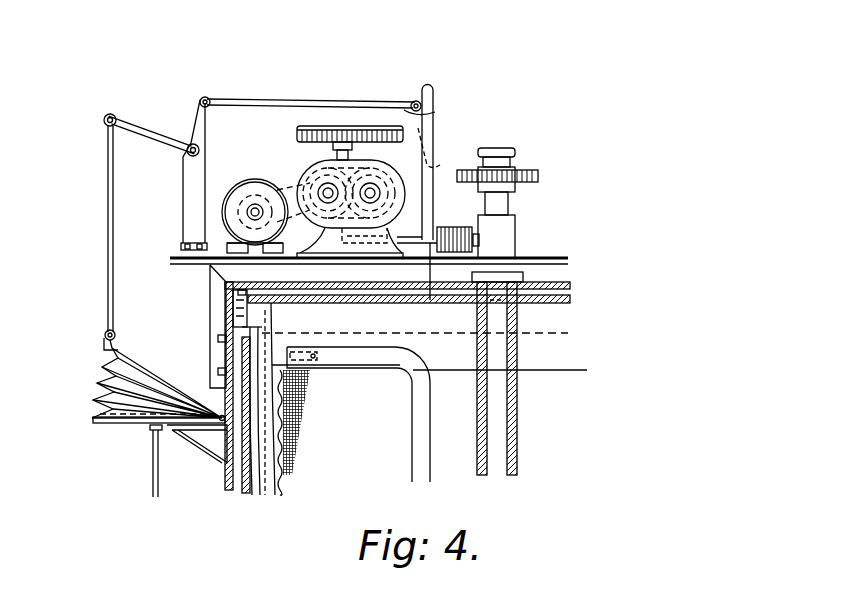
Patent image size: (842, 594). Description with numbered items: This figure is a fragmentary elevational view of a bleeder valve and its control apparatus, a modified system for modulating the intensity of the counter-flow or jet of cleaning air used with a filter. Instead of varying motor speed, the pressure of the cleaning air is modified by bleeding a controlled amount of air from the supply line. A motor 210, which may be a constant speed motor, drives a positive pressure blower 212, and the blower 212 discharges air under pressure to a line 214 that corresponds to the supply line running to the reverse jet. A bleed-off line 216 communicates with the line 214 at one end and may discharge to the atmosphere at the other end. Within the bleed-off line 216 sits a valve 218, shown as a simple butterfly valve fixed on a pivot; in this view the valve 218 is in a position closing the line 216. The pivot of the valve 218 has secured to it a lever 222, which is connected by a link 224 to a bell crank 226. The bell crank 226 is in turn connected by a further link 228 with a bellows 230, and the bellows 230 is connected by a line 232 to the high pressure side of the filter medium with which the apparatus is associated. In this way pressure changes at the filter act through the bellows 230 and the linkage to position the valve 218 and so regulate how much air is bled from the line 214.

The motor 210 is at (262, 180).
The positive pressure blower 212 is at (400, 198).
The line 214 is at (432, 302).
The bleed-off line 216 is at (437, 100).
The valve 218 is at (440, 165).
The lever 222 is at (410, 112).
The link 224 is at (272, 84).
The bell crank 226 is at (142, 124).
The link 228 is at (107, 237).
The bellows 230 is at (108, 425).
The line 232 is at (150, 476).